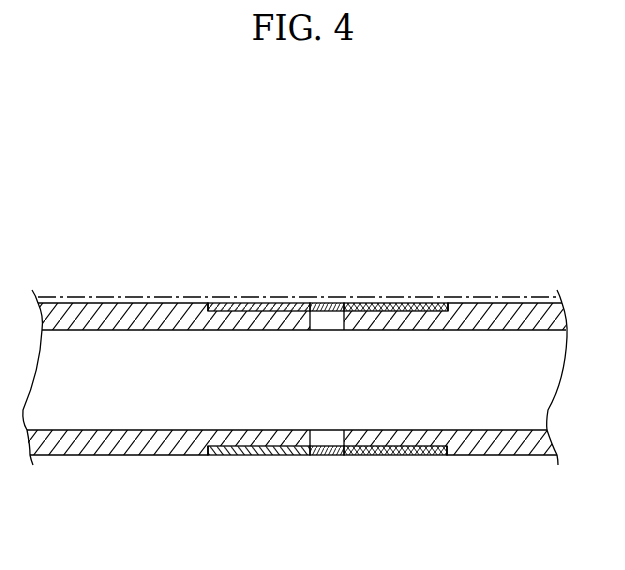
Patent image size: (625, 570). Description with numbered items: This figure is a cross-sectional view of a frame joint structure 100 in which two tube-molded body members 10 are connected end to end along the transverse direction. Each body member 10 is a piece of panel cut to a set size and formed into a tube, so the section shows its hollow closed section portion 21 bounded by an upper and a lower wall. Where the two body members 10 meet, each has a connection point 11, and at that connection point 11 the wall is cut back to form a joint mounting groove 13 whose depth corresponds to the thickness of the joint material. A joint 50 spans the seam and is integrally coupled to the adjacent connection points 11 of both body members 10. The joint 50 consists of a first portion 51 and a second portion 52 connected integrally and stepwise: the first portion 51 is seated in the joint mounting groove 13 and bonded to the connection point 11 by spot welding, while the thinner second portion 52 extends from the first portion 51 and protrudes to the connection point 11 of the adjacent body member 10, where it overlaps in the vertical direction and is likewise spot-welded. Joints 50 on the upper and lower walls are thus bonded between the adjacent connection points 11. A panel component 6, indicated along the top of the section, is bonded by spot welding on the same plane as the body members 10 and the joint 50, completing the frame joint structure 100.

The frame joint structure 100 is at (346, 166).
The panel component 6 is at (484, 297).
The body member 10 is at (185, 462).
The connection point 11 is at (285, 333).
The joint mounting groove 13 is at (212, 303).
The closed section portion 21 is at (100, 403).
The joint 50 is at (328, 343).
The first portion 51 is at (238, 304).
The second portion 52 is at (336, 304).